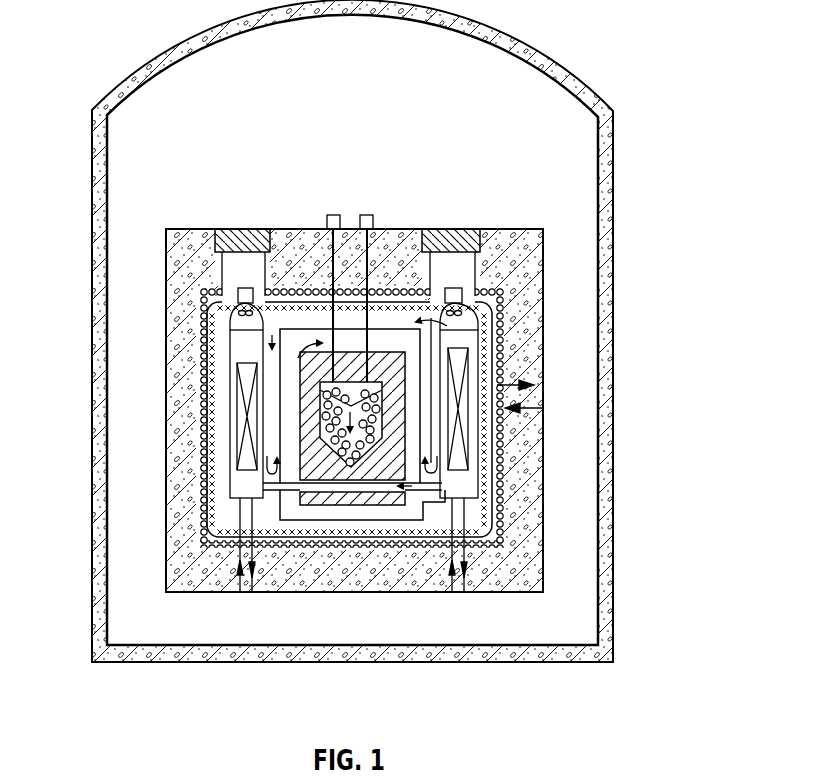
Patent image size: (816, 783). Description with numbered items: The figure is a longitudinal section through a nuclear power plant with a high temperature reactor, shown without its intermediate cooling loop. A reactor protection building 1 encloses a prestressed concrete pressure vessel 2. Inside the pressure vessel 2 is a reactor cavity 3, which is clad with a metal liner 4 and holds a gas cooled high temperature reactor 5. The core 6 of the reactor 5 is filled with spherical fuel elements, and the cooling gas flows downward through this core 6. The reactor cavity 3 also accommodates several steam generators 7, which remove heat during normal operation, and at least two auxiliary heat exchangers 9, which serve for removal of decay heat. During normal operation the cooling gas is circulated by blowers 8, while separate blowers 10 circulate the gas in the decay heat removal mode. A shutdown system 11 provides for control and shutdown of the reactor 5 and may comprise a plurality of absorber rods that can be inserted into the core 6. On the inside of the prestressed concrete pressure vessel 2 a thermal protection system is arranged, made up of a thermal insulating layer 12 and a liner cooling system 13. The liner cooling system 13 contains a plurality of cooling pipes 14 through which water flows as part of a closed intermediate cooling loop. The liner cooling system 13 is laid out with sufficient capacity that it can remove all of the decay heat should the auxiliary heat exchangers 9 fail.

The reactor protection building 1 is at (612, 320).
The prestressed concrete pressure vessel 2 is at (520, 497).
The reactor cavity 3 is at (493, 437).
The metal liner 4 is at (495, 523).
The gas cooled high temperature reactor 5 is at (310, 388).
The core 6 is at (330, 442).
The steam generators 7 is at (465, 377).
The blowers 8 is at (495, 310).
The auxiliary heat exchangers 9 is at (240, 418).
The blowers 10 is at (207, 318).
The shutdown system 11 is at (337, 262).
The thermal insulating layer 12 is at (280, 532).
The liner cooling system 13 is at (500, 460).
The cooling pipes 14 is at (200, 497).